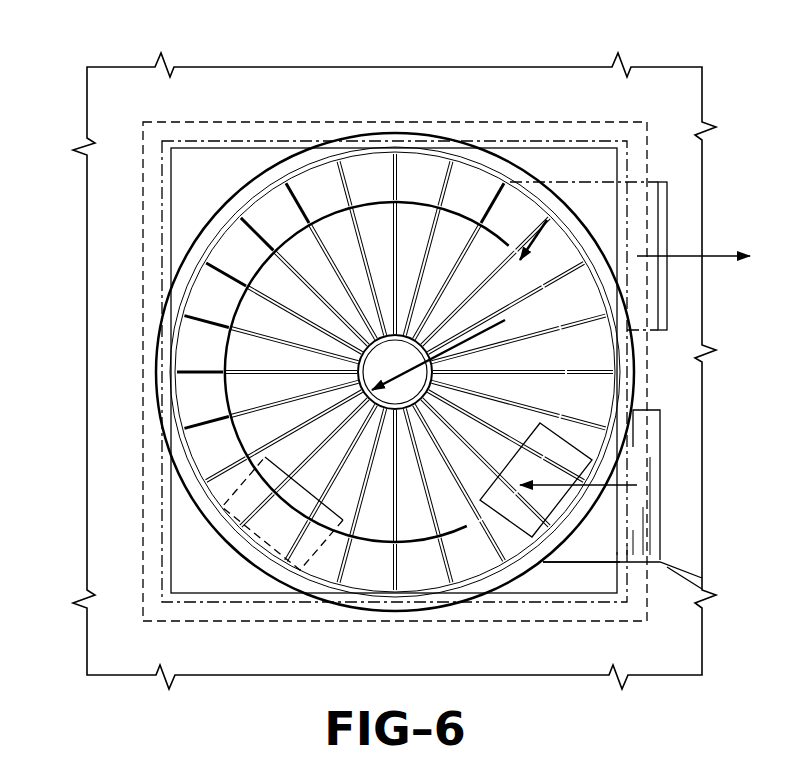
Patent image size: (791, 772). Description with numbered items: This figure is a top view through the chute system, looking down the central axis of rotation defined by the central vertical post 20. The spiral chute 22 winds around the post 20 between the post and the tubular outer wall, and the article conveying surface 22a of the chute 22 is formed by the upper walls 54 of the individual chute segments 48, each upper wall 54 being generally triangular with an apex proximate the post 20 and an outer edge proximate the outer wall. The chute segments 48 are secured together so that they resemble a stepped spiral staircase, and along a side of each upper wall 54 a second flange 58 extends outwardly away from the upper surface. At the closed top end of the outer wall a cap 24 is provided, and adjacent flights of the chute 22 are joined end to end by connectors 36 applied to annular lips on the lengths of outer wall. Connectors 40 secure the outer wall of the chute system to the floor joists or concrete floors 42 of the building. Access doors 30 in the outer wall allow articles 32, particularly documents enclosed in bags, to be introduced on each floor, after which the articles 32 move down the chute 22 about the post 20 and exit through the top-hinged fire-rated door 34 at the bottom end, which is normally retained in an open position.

The central vertical post 20 is at (573, 313).
The spiral chute 22 is at (190, 350).
The article conveying surface 22a is at (420, 450).
The cap 24 is at (347, 153).
The access door 30 is at (643, 447).
The articles 32 is at (533, 497).
The fire-rated door 34 is at (668, 222).
The connectors 36 is at (517, 570).
The connectors 40 is at (259, 135).
The floors 42 is at (107, 507).
The chute segment 48 is at (464, 198).
The upper wall 54 is at (233, 256).
The second flange 58 is at (397, 433).